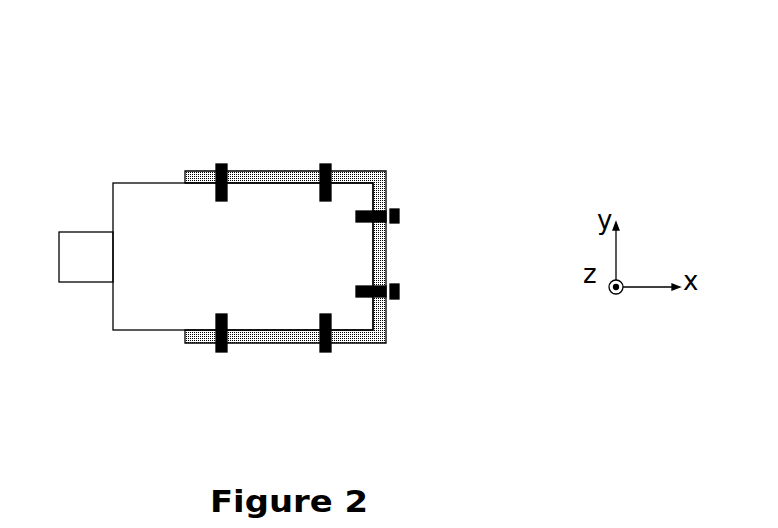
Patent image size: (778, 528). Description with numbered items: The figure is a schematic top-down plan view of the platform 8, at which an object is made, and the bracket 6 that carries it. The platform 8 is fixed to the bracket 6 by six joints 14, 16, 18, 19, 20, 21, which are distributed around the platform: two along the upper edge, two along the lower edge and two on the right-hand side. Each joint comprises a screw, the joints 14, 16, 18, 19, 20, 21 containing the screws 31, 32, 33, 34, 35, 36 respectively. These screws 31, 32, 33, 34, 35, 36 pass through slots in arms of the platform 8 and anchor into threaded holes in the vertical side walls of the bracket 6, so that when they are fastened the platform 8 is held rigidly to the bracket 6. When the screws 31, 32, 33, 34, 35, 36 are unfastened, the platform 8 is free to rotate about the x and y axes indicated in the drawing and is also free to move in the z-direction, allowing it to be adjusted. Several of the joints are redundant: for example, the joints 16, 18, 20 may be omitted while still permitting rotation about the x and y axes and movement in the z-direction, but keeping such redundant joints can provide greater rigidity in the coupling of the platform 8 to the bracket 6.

The bracket 6 is at (86, 223).
The platform 8 is at (209, 261).
The joint 14 is at (232, 365).
The joint 16 is at (342, 365).
The joint 18 is at (413, 312).
The joint 19 is at (411, 198).
The joint 20 is at (315, 151).
The joint 21 is at (205, 150).
The screw 31 is at (202, 376).
The screw 32 is at (311, 376).
The screw 33 is at (427, 277).
The screw 34 is at (427, 217).
The screw 35 is at (347, 139).
The screw 36 is at (243, 139).